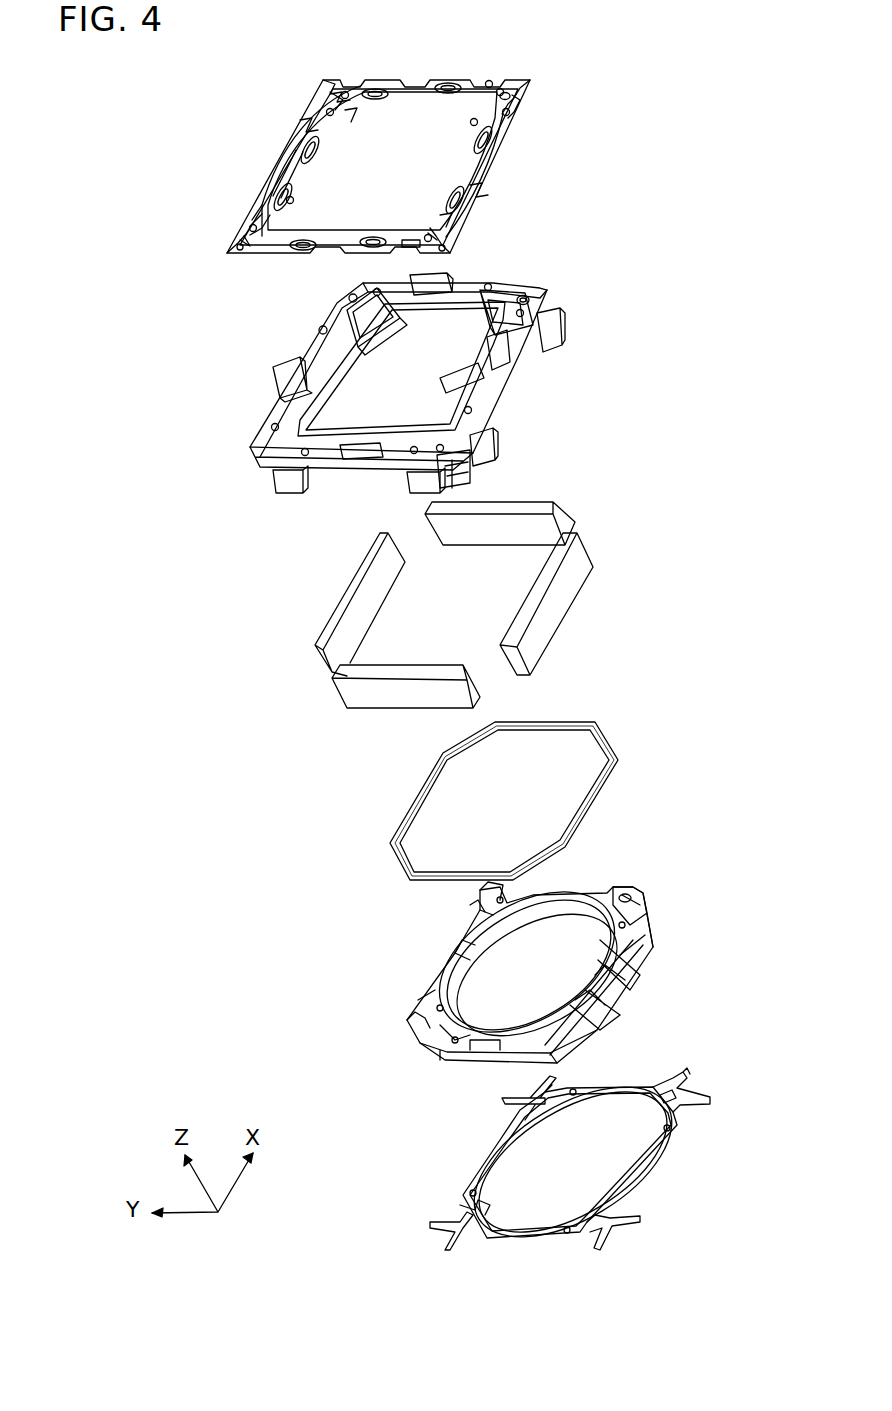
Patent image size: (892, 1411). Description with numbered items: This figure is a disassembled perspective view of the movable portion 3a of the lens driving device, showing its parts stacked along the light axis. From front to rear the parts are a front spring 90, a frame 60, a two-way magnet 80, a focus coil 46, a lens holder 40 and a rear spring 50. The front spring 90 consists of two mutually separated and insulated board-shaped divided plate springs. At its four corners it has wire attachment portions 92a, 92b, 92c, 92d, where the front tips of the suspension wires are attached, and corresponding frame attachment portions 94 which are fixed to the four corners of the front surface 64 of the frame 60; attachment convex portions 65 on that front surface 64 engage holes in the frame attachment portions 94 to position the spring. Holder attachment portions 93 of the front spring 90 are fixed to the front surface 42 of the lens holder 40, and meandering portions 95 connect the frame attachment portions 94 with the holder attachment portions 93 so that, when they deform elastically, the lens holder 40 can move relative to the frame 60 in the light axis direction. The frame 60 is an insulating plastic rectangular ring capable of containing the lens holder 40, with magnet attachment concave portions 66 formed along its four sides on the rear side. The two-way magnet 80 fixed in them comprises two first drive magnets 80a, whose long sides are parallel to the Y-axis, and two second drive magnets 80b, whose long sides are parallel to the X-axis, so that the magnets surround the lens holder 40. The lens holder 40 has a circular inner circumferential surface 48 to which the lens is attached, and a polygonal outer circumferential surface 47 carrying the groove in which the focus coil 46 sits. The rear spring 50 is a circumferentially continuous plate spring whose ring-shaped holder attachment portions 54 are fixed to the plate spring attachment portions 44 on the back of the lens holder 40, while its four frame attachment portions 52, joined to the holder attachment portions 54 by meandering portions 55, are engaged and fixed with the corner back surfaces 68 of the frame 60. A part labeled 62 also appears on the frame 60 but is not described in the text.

The movable portion 3a is at (680, 212).
The front spring 90 is at (551, 103).
The wire attachment portion 92a is at (231, 246).
The wire attachment portion 92b is at (443, 238).
The wire attachment portion 92c is at (508, 78).
The wire attachment portion 92d is at (333, 78).
The holder attachment portion 93 is at (468, 120).
The frame attachment portion 94 is at (489, 78).
The meandering portion 95 is at (281, 166).
The frame 60 is at (583, 320).
The terminal portion 62 is at (473, 476).
The front surface 64 is at (511, 293).
The attachment convex portion 65 is at (347, 293).
The magnet attachment concave portion 66 is at (495, 416).
The corner back surface 68 is at (271, 488).
The two-way magnet 80 is at (681, 516).
The first drive magnet 80a is at (535, 498).
The second drive magnet 80b is at (338, 593).
The focus coil 46 is at (618, 746).
The lens holder 40 is at (711, 876).
The front surface 42 is at (653, 936).
The plate spring attachment portion 44 is at (538, 1073).
The outer circumferential surface 47 is at (643, 970).
The inner circumferential surface 48 is at (563, 908).
The rear spring 50 is at (753, 1056).
The frame attachment portion 52 is at (693, 1106).
The holder attachment portion 54 is at (678, 1128).
The meandering portion 55 is at (481, 1236).